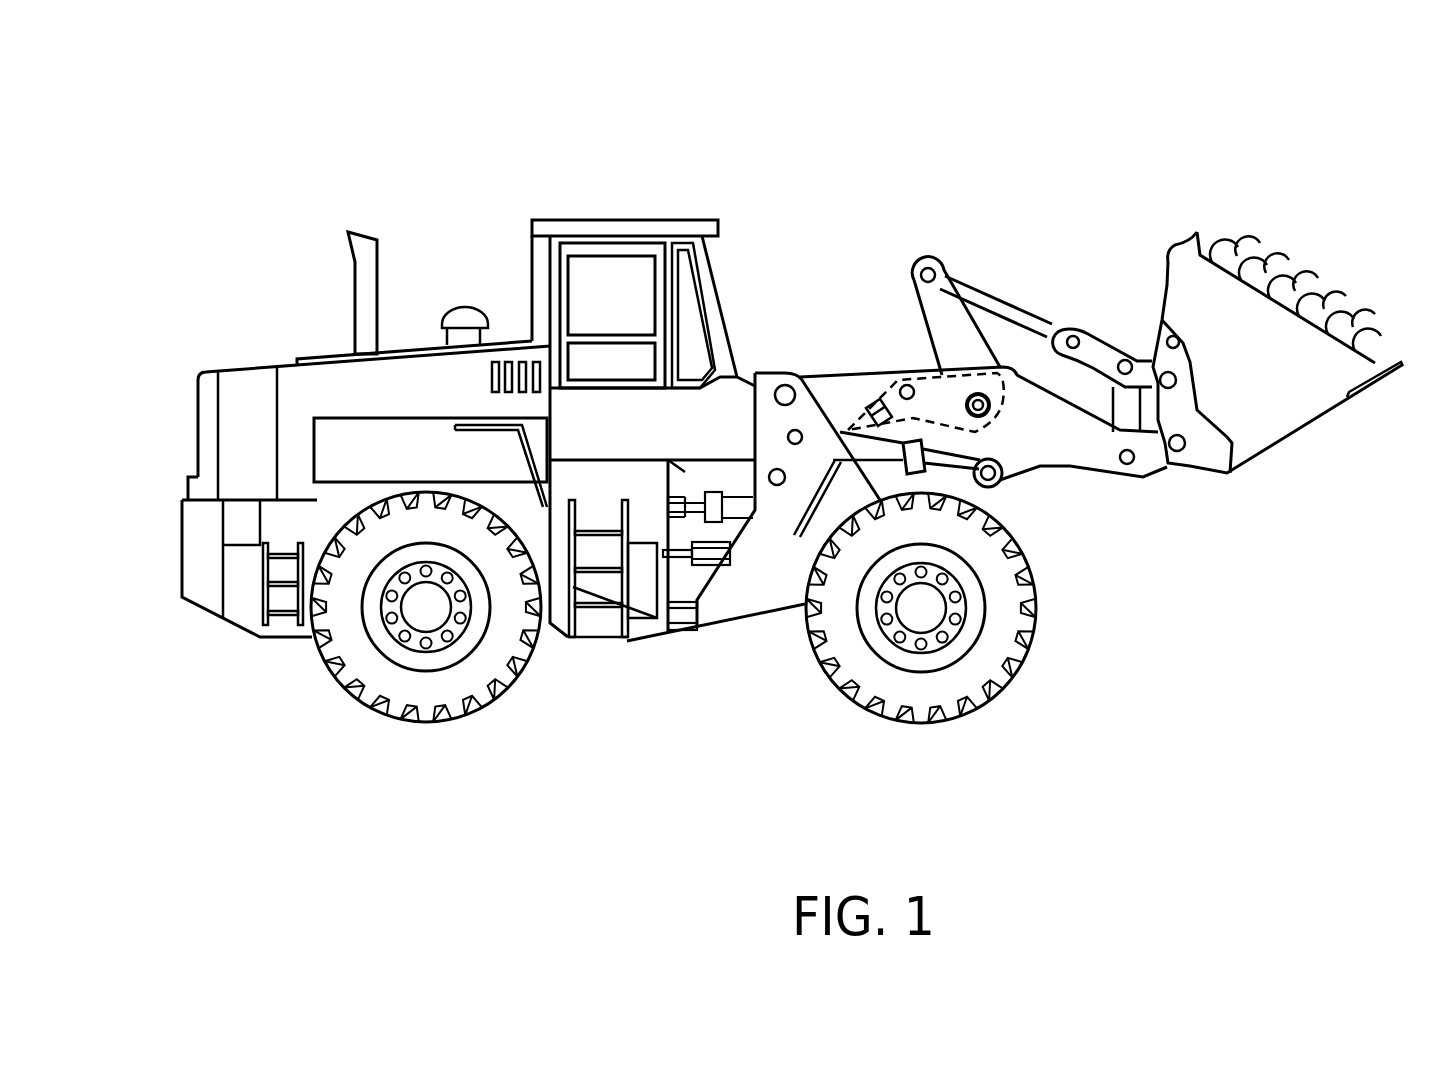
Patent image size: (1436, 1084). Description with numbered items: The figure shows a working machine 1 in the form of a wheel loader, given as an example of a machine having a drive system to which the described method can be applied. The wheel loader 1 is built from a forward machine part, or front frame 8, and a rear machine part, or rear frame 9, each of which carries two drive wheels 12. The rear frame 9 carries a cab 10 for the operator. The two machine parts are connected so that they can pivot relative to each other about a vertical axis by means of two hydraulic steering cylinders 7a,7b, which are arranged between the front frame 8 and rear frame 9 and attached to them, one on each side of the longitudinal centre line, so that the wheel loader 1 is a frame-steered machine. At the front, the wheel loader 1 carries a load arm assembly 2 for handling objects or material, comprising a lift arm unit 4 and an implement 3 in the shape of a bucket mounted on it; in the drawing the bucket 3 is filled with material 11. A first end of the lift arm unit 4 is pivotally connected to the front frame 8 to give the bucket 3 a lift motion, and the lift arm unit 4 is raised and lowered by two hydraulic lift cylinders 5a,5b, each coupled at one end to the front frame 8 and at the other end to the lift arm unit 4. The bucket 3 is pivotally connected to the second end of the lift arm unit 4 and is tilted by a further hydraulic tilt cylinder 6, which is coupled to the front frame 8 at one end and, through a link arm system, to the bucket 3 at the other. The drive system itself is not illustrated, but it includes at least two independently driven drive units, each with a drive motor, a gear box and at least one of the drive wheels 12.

The working machine 1 is at (492, 132).
The load arm assembly 2 is at (1122, 275).
The implement 3 is at (1255, 410).
The lift arm unit 4 is at (1073, 450).
The lift cylinders 5a,5b is at (950, 466).
The tilt cylinder 6 is at (868, 400).
The steering cylinders 7a,7b is at (730, 507).
The front frame 8 is at (730, 598).
The rear frame 9 is at (243, 597).
The cab 10 is at (638, 225).
The material 11 is at (1293, 298).
The drive wheels 12 is at (370, 662).